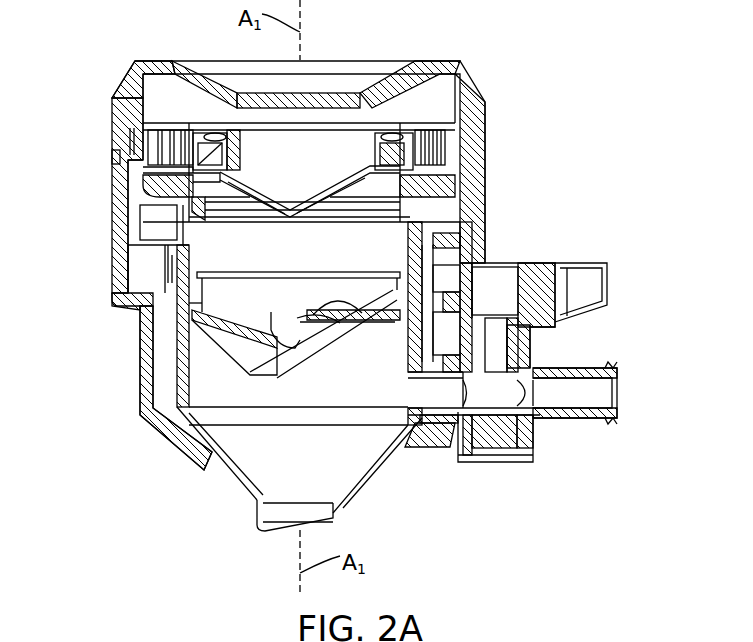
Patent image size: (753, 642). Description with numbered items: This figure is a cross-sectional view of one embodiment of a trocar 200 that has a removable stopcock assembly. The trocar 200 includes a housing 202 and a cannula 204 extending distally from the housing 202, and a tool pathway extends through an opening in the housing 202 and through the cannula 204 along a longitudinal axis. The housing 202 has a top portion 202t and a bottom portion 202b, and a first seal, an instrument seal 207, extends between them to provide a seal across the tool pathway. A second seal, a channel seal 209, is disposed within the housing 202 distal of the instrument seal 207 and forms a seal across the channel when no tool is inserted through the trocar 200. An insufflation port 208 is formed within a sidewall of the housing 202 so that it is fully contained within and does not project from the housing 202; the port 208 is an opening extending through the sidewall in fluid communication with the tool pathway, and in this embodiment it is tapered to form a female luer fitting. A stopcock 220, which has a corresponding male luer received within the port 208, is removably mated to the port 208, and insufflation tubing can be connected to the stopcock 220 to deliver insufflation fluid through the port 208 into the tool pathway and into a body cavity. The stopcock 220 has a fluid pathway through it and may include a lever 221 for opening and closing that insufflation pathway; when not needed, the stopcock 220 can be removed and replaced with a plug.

The trocar 200 is at (602, 85).
The housing 202 is at (147, 358).
The top portion 202t is at (111, 112).
The bottom portion 202b is at (111, 288).
The cannula 204 is at (252, 513).
The instrument seal 207 is at (297, 172).
The insufflation port 208 is at (447, 412).
The channel seal 209 is at (300, 345).
The stopcock 220 is at (556, 263).
The lever 221 is at (607, 268).